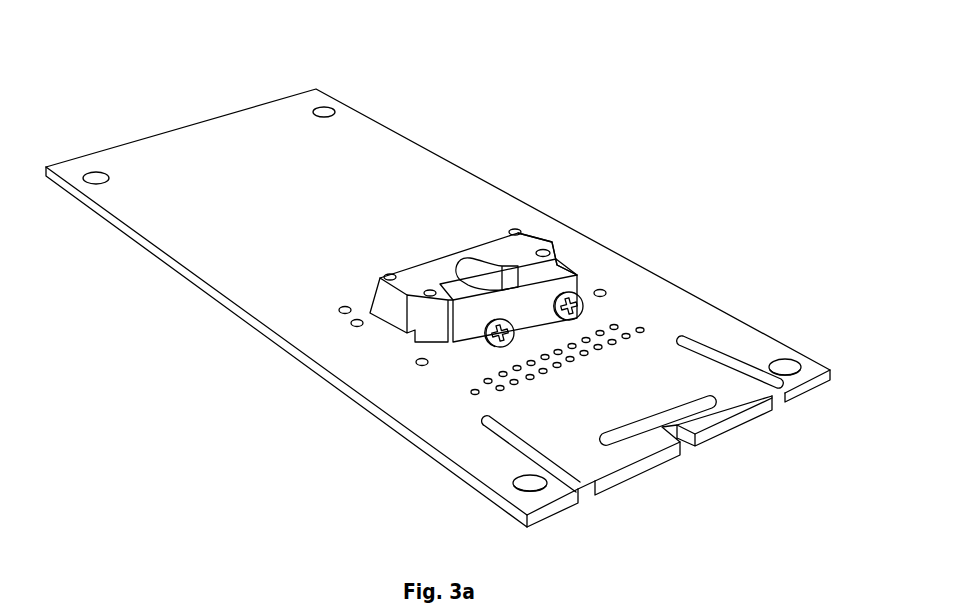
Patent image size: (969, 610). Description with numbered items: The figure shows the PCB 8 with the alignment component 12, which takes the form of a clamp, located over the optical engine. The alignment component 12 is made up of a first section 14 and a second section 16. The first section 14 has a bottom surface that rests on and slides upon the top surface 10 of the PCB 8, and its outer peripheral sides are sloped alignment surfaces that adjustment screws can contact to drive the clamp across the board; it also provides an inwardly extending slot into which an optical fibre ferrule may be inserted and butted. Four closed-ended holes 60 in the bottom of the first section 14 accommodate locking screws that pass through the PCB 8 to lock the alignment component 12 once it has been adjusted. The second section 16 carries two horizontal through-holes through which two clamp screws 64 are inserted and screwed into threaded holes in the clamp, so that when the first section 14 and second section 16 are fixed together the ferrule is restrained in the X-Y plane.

The PCB 8 is at (362, 137).
The top surface of the PCB 10 is at (402, 148).
The alignment component 12 is at (397, 309).
The first section 14 is at (540, 243).
The second section 16 is at (527, 320).
The closed-ended holes 60 is at (512, 231).
The clamp screws 64 is at (584, 312).